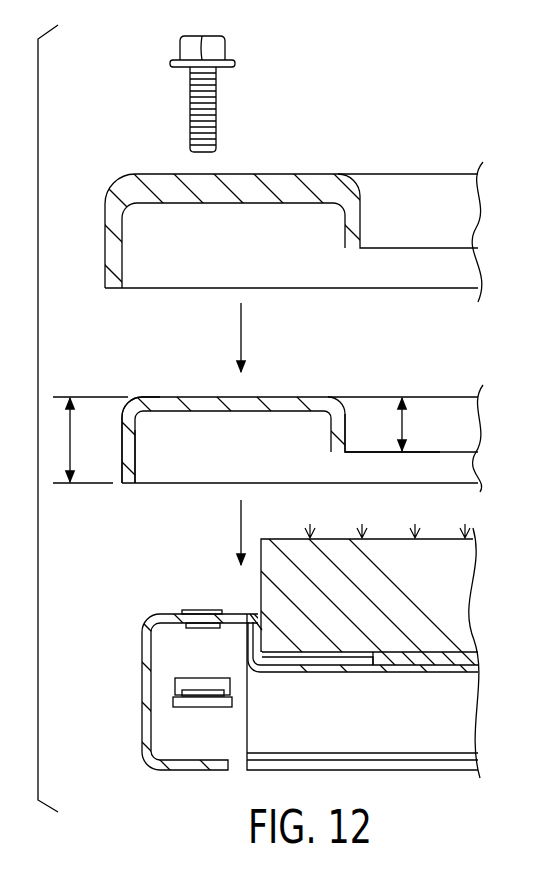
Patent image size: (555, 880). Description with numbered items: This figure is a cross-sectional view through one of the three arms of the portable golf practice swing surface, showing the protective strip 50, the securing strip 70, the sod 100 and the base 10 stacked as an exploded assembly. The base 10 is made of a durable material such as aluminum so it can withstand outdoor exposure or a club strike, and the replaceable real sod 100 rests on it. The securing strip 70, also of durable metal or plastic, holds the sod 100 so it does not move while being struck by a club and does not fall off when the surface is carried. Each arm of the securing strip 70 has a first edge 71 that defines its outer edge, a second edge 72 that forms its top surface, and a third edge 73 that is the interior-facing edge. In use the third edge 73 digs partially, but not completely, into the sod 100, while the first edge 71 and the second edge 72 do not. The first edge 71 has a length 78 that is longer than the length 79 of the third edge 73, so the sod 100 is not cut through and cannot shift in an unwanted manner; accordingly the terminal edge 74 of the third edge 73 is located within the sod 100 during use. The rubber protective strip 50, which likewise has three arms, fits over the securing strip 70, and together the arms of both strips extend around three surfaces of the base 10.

The protective strip 50 is at (258, 173).
The securing strip 70 is at (122, 470).
The first edge 71 is at (131, 427).
The second edge 72 is at (360, 397).
The third edge 73 is at (468, 437).
The terminal edge 74 is at (437, 452).
The length 78 is at (70, 440).
The length 79 is at (402, 428).
The sod 100 is at (447, 595).
The base 10 is at (395, 672).